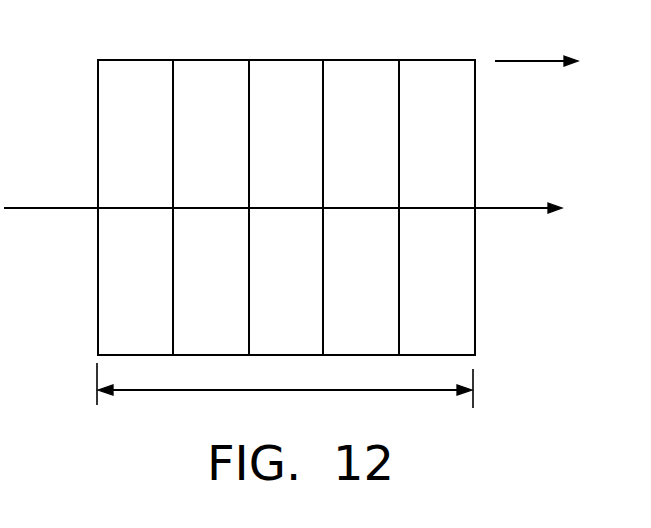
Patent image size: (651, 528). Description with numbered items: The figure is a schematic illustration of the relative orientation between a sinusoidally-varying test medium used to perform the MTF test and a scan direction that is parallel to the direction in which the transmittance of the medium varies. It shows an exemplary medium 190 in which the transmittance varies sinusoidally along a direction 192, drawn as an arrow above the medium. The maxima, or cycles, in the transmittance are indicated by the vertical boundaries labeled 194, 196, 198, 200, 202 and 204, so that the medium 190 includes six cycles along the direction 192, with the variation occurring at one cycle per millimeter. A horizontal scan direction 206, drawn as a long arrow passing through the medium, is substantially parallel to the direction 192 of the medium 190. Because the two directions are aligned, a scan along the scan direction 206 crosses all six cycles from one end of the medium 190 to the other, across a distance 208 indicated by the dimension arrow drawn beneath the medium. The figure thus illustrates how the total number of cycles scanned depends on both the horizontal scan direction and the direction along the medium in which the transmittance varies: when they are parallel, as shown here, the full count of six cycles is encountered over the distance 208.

The medium 190 is at (131, 92).
The direction 192 is at (507, 65).
The maximum 194 is at (98, 123).
The maximum 196 is at (173, 85).
The maximum 198 is at (249, 85).
The maximum 200 is at (323, 85).
The maximum 202 is at (399, 85).
The maximum 204 is at (475, 85).
The horizontal scan direction 206 is at (487, 208).
The distance 208 is at (350, 392).